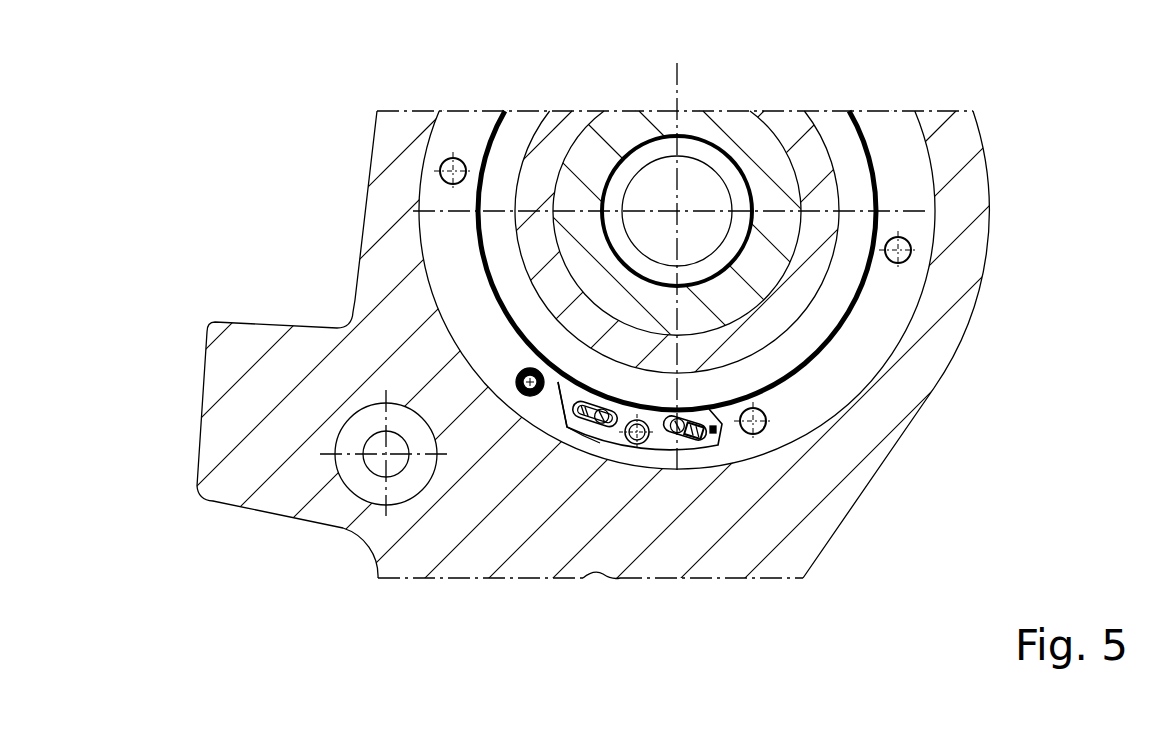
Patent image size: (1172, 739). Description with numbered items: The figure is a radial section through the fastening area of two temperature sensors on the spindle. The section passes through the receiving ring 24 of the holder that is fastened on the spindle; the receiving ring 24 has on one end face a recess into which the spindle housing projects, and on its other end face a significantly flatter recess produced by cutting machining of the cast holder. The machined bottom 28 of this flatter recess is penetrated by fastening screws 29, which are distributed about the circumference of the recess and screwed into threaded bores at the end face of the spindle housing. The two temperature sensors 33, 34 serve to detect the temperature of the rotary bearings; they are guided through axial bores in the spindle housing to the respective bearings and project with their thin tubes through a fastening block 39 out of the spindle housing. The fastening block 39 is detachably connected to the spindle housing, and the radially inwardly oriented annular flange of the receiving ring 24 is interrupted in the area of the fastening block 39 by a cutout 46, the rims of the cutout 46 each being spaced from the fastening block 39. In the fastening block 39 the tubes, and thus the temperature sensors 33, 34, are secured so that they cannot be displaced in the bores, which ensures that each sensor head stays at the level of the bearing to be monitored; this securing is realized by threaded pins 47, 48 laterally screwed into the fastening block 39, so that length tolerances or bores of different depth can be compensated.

The receiving ring 24 is at (915, 385).
The bottom 28 is at (900, 178).
The fastening screws 29 is at (457, 158).
The temperature sensor 33 is at (590, 424).
The temperature sensor 34 is at (665, 440).
The fastening block 39 is at (642, 446).
The cutout 46 is at (720, 435).
The threaded pin 47 is at (567, 438).
The threaded pin 48 is at (690, 448).